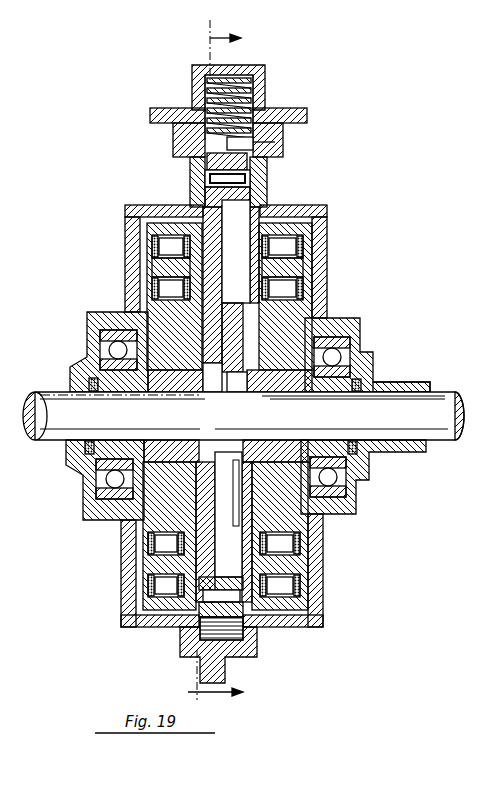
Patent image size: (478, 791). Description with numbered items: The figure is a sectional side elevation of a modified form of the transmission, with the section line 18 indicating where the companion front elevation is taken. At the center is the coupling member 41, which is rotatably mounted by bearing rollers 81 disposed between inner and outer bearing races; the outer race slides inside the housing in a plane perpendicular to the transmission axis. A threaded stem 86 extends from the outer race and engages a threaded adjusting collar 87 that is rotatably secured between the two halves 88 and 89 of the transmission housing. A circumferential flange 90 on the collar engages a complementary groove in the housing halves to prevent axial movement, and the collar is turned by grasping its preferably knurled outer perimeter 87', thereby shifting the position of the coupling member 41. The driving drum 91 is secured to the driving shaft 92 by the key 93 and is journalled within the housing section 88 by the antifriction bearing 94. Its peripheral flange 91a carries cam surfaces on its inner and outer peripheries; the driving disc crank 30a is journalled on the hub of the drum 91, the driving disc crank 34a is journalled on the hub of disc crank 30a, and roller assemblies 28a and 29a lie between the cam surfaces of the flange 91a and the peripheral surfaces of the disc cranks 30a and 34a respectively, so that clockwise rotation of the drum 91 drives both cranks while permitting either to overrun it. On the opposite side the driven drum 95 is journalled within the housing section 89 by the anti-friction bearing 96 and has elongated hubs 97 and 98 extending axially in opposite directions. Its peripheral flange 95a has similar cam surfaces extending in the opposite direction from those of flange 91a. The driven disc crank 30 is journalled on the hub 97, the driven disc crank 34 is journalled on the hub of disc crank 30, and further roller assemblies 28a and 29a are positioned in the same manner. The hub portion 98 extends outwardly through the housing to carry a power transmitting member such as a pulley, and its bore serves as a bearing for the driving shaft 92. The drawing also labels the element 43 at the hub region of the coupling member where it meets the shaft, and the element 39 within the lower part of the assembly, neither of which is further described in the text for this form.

The section line 18— 18 is at (204, 359).
The threaded adjusting collar 87 is at (237, 76).
The threaded stem 86 is at (254, 94).
The outer perimeter 87' is at (251, 132).
The circumferential flange 90 is at (249, 147).
The bearing rollers 81 is at (200, 170).
The transmission housing half 88 is at (205, 180).
The transmission housing half 89 is at (267, 180).
The driven disc crank 30 is at (325, 225).
The driving disc crank 30a is at (140, 223).
The driving drum 91 is at (140, 302).
The driven drum 95 is at (315, 318).
The roller assemblies 28a is at (152, 245).
The roller assemblies 29a is at (152, 288).
The peripheral flange 91a is at (152, 270).
The peripheral flange 95a is at (303, 270).
The coupling member 41 is at (242, 270).
The rotor hub 43 is at (218, 390).
The antifriction bearing 94 is at (100, 350).
The anti-friction bearing 96 is at (365, 357).
The hub portion 98 is at (410, 385).
The driving shaft 92 is at (437, 407).
The key 93 is at (154, 394).
The hub 97 is at (275, 393).
The driving disc crank 34a is at (157, 512).
The driven disc crank 34 is at (288, 513).
The lower rotor 39 is at (240, 550).